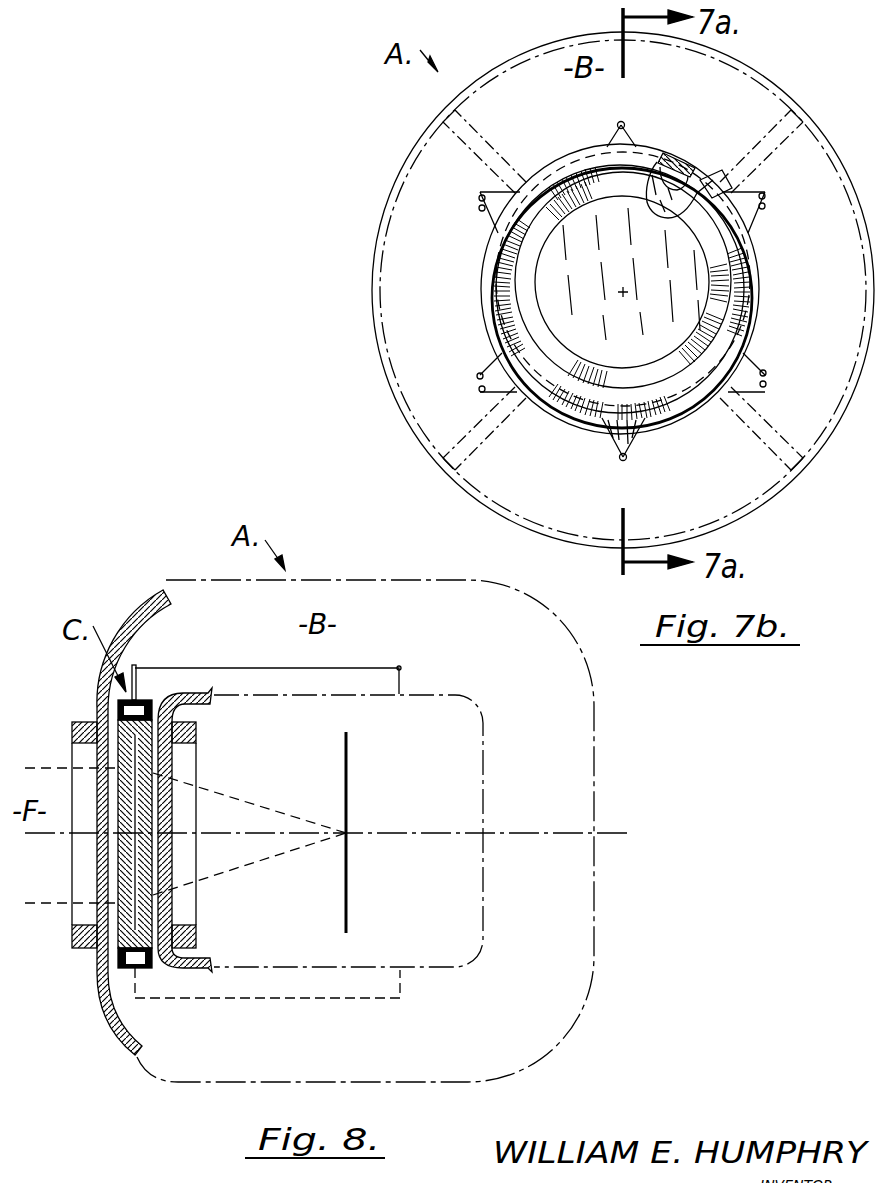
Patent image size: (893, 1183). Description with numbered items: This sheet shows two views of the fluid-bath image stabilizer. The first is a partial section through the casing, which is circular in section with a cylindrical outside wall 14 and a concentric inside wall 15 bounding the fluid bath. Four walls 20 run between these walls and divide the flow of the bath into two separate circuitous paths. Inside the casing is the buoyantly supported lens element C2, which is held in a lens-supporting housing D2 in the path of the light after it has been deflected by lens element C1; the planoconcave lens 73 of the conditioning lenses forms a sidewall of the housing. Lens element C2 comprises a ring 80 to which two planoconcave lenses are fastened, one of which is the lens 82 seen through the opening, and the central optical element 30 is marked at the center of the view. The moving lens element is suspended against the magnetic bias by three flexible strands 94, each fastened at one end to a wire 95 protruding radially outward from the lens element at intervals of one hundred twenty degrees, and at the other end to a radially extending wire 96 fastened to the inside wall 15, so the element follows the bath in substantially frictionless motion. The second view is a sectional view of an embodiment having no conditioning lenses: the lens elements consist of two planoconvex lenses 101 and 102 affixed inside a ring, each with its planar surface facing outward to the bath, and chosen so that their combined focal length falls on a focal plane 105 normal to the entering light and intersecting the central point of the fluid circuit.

In FIG. 7B, the outside wall 14 is at (418, 144).
In FIG. 7B, the wall 20 is at (620, 296).
In FIG. 7B, the ring 80 is at (575, 186).
In FIG. 7B, the planoconcave lens 82 is at (623, 280).
In FIG. 7B, the lens 30 is at (623, 289).
In FIG. 7B, the planoconcave lens 73 is at (662, 168).
In FIG. 7B, the inside wall 15 is at (695, 166).
In FIG. 7B, the flexible strand 94 is at (479, 203).
In FIG. 7B, the wire 95 is at (617, 137).
In FIG. 7B, the wire 96 is at (622, 121).
In FIG. 7B, the lens element C1 is at (588, 440).
In FIG. 7B, the lens element C2 is at (486, 281).
In FIG. 7B, the lens-supporting housing D2 is at (541, 408).
In FIG. 8, the planoconvex lens 101 is at (118, 872).
In FIG. 8, the planoconvex lens 102 is at (150, 855).
In FIG. 8, the focal plane 105 is at (346, 743).